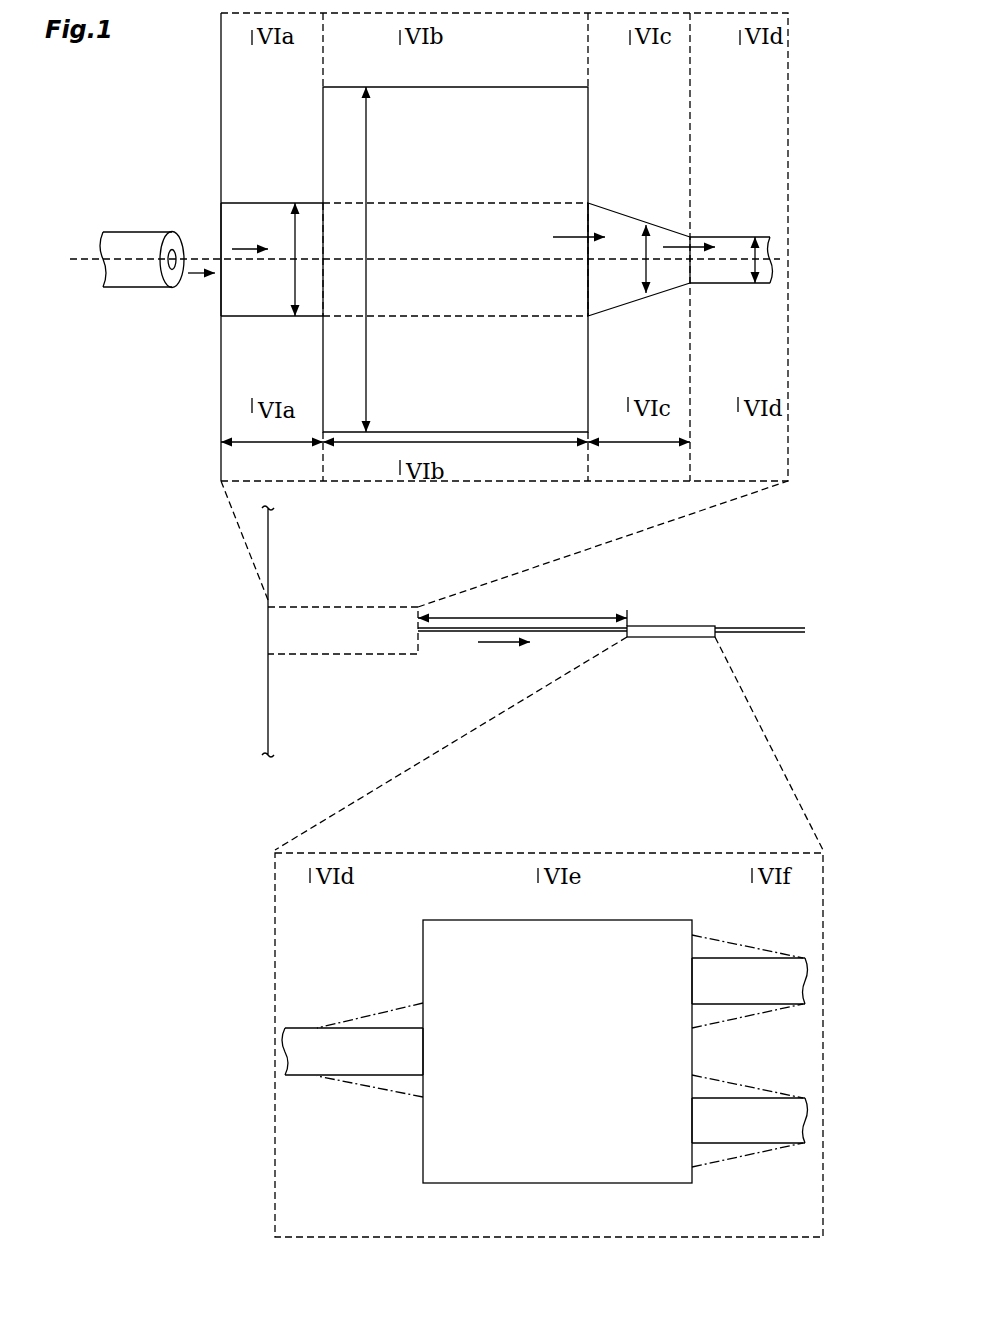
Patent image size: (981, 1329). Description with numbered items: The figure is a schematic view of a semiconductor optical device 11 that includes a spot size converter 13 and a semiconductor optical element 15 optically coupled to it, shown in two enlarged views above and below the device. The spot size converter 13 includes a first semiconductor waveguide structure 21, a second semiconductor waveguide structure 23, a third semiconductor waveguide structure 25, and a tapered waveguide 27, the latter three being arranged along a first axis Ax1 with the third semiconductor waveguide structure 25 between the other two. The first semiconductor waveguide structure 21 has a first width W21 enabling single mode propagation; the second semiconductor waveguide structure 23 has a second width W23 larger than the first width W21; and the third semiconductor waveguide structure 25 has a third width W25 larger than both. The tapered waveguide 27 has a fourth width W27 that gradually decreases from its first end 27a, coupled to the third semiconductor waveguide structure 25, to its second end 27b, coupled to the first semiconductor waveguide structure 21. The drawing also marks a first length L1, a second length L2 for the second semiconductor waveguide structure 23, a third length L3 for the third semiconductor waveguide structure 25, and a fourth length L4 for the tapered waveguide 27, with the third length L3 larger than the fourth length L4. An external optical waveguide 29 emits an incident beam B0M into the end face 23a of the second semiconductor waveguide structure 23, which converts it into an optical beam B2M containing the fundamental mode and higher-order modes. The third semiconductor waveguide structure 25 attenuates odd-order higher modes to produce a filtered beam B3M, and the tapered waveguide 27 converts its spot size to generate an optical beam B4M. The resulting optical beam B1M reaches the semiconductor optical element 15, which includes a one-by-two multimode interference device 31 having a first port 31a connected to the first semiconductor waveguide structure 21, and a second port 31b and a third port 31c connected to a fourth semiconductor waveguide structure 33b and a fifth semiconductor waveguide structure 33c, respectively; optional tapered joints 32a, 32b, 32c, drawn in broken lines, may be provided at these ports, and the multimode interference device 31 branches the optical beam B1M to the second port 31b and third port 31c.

The semiconductor optical device 11 is at (268, 700).
The spot size converter 13 is at (355, 606).
The semiconductor optical element 15 is at (688, 626).
The first semiconductor waveguide structure 21 is at (770, 232).
The second semiconductor waveguide structure 23 is at (323, 197).
The end face 23a is at (221, 203).
The third semiconductor waveguide structure 25 is at (323, 82).
The tapered waveguide 27 is at (688, 196).
The first end 27a is at (592, 318).
The second end 27b is at (693, 286).
The external optical waveguide 29 is at (104, 232).
The multimode interference device 31 is at (600, 918).
The first port 31a is at (423, 1052).
The second port 31b is at (693, 983).
The third port 31c is at (693, 1120).
The tapered joint 32a is at (388, 1010).
The tapered joint 32b is at (772, 1010).
The tapered joint 32c is at (733, 1062).
The fourth semiconductor waveguide structure 33b is at (808, 958).
The fifth semiconductor waveguide structure 33c is at (808, 1143).
The first axis Ax1 is at (738, 263).
The first width W21 is at (765, 262).
The second width W23 is at (292, 292).
The third width W25 is at (396, 259).
The fourth width W27 is at (650, 278).
The first length L1 is at (522, 608).
The second length L2 is at (272, 458).
The third length L3 is at (455, 458).
The fourth length L4 is at (639, 458).
The incident beam B0M is at (189, 274).
The optical beam B1M is at (500, 644).
The optical beam B2M is at (232, 249).
The filtered beam B3M is at (580, 236).
The optical beam B4M is at (683, 247).